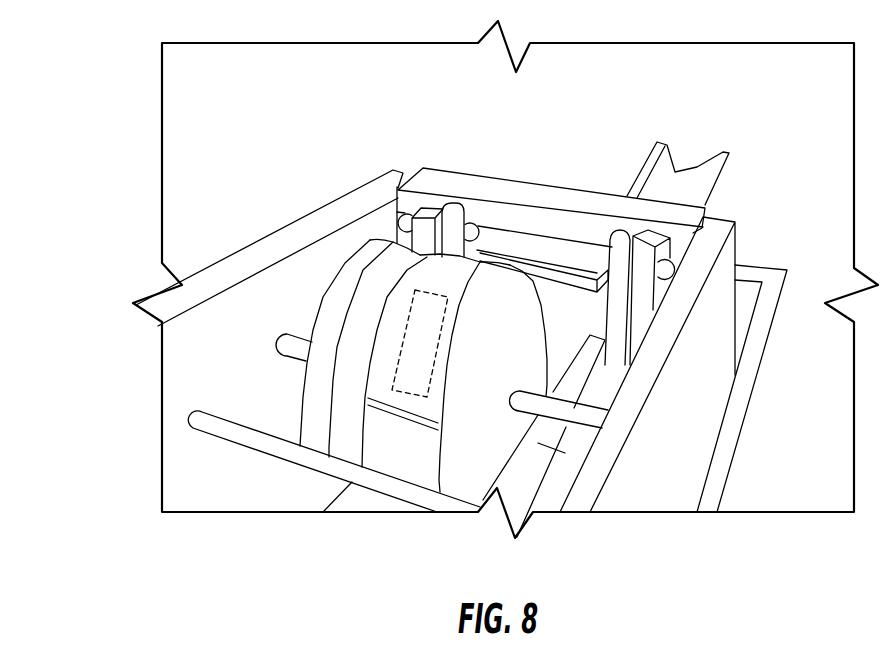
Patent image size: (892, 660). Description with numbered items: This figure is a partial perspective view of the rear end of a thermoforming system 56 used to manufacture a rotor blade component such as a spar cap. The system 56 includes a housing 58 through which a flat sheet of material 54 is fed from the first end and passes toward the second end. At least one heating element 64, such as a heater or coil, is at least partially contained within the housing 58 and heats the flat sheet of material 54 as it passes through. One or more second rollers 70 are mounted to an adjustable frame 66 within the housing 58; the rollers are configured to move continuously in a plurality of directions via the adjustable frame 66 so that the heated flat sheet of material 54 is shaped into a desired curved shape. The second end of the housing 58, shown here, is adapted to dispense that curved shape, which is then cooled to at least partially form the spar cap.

The flat sheet of material 54 is at (684, 190).
The thermoforming system 56 is at (127, 284).
The housing 58 is at (628, 393).
The heating element 64 is at (410, 375).
The adjustable frame 66 is at (567, 408).
The second roller 70 is at (462, 292).